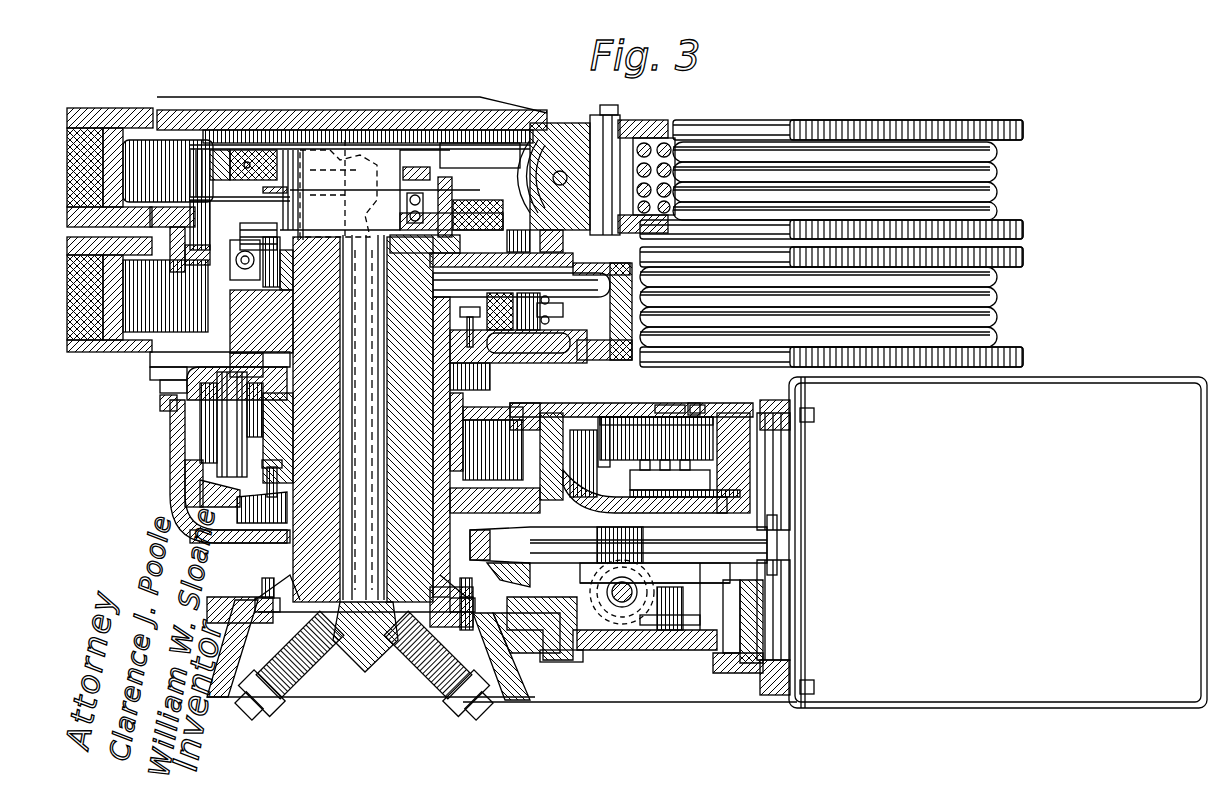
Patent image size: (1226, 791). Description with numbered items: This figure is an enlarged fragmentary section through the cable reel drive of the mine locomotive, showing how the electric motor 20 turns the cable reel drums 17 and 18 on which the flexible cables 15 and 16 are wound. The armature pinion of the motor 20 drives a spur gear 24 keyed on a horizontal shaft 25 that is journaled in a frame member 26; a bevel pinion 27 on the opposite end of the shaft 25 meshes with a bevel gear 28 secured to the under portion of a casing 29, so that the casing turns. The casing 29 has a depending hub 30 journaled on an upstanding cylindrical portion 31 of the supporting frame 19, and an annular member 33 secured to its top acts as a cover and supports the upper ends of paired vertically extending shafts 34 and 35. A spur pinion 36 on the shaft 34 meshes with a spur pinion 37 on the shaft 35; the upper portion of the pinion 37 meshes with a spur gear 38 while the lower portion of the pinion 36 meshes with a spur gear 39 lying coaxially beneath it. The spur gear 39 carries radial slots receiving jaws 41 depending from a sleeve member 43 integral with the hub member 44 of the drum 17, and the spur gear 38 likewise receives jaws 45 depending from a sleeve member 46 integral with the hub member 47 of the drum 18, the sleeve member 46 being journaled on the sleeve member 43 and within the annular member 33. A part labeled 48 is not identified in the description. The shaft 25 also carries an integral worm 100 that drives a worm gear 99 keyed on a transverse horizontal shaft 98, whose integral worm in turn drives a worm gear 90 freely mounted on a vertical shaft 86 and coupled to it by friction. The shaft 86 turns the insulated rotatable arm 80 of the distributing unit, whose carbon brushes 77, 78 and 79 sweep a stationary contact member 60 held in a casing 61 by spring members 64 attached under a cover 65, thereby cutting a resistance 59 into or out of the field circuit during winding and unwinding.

The flexible cable 15 is at (1000, 170).
The flexible cable 16 is at (1000, 298).
The cable reel drum 17 is at (1027, 130).
The cable reel drum 18 is at (1027, 255).
The supporting frame 19 is at (257, 660).
The electric motor 20 is at (1148, 383).
The spur gear 24 is at (790, 473).
The horizontal shaft 25 is at (777, 517).
The frame member 26 is at (722, 665).
The bevel pinion 27 is at (495, 612).
The bevel gear 28 is at (237, 543).
The casing 29 is at (175, 473).
The depending hub 30 is at (290, 548).
The upstanding cylindrical portion 31 is at (190, 377).
The annular member 33 is at (163, 395).
The vertically extending shaft 34 is at (530, 403).
The vertically extending shaft 35 is at (263, 440).
The spur pinion 36 is at (573, 407).
The spur pinion 37 is at (200, 395).
The spur gear 38 is at (490, 407).
The spur gear 39 is at (185, 455).
The jaws 41 is at (262, 475).
The sleeve member 43 is at (165, 378).
The hub member 44 is at (152, 110).
The jaws 45 is at (247, 420).
The sleeve member 46 is at (364, 455).
The hub member 47 is at (187, 373).
The plate 48 is at (160, 360).
The resistance 59 is at (656, 403).
The stationary contact member 60 is at (653, 417).
The casing 61 is at (612, 417).
The spring members 64 is at (627, 403).
The cover 65 is at (817, 378).
The brush 77 is at (690, 407).
The brush 78 is at (694, 413).
The brush 79 is at (740, 403).
The insulated rotatable arm 80 is at (660, 430).
The vertical shaft 86 is at (647, 615).
The worm gear 90 is at (683, 630).
The horizontal shaft 98 is at (622, 608).
The worm gear 99 is at (597, 620).
The worm 100 is at (590, 633).